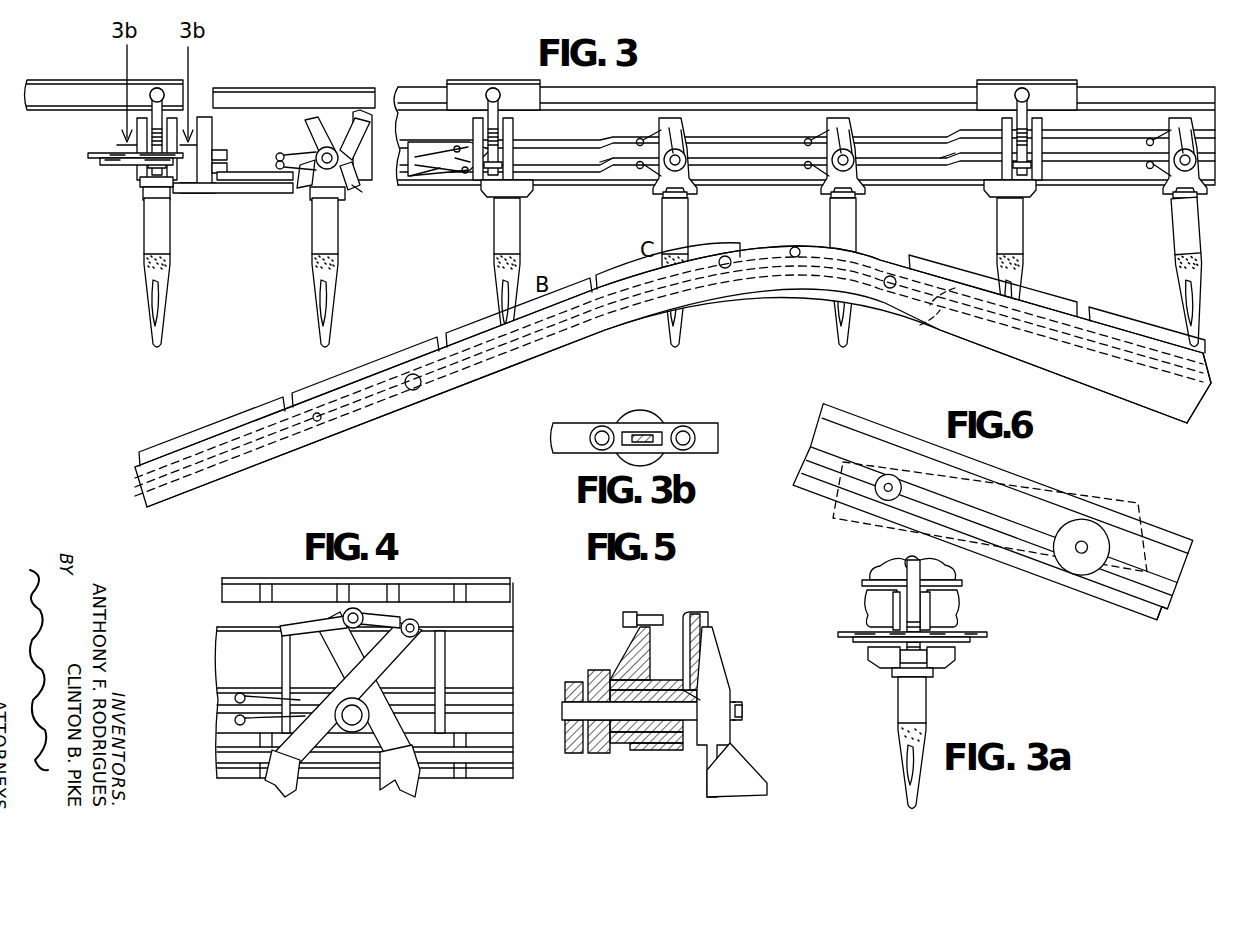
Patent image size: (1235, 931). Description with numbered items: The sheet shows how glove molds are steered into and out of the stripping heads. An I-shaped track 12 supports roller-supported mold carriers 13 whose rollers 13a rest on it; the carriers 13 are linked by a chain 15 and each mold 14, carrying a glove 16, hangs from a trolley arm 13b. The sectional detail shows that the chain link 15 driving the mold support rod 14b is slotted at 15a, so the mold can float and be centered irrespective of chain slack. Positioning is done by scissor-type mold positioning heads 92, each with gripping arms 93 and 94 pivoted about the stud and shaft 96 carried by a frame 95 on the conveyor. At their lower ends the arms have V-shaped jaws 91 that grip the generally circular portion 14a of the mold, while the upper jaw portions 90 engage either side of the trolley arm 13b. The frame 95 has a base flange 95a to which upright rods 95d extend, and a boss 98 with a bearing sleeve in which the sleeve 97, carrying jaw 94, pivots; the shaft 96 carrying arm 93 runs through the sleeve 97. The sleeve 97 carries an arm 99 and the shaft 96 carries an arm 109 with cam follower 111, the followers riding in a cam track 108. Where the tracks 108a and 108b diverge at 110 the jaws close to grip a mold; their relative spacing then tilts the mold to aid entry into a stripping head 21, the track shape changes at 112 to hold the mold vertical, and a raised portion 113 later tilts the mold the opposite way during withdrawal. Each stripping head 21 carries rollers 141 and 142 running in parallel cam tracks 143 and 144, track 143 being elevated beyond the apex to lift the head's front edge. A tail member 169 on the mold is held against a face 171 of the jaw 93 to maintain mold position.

In FIG. 3, the track 12 is at (112, 82).
In FIG. 3A, the track 12 is at (958, 582).
In FIG. 3, the mold carrier 13 is at (150, 128).
In FIG. 3A, the mold carrier 13 is at (910, 610).
In FIG. 3, the roller 13a is at (160, 87).
In FIG. 3A, the roller 13a is at (900, 570).
In FIG. 3, the trolley arm 13b is at (498, 105).
In FIG. 3, the mold 14 is at (184, 238).
In FIG. 3A, the mold 14 is at (938, 700).
In FIG. 3, the mold portion 14a is at (142, 192).
In FIG. 3B, the mold portion 14a is at (650, 420).
In FIG. 3A, the mold portion 14a is at (905, 678).
In FIG. 3B, the support rod 14b is at (637, 433).
In FIG. 3, the chain 15 is at (110, 160).
In FIG. 3B, the chain 15 is at (708, 422).
In FIG. 3A, the chain 15 is at (963, 632).
In FIG. 3B, the slot 15a is at (612, 423).
In FIG. 3, the glove 16 is at (170, 272).
In FIG. 3A, the glove 16 is at (898, 742).
In FIG. 3, the stripper head 21 is at (268, 402).
In FIG. 6, the stripper head 21 is at (1132, 505).
In FIG. 3, the jaw portion 90 is at (310, 120).
In FIG. 4, the jaw portion 90 is at (305, 635).
In FIG. 5, the jaw portion 90 is at (705, 625).
In FIG. 3, the V-shaped jaw 91 is at (358, 192).
In FIG. 3, the mold positioning head 92 is at (213, 125).
In FIG. 4, the mold positioning head 92 is at (325, 668).
In FIG. 5, the mold positioning head 92 is at (712, 668).
In FIG. 3A, the scissor gripping arm 93 is at (875, 660).
In FIG. 4, the scissor gripping arm 93 is at (290, 790).
In FIG. 5, the scissor gripping arm 93 is at (760, 785).
In FIG. 3, the scissor gripping arm 94 is at (495, 375).
In FIG. 3A, the scissor gripping arm 94 is at (945, 662).
In FIG. 4, the scissor gripping arm 94 is at (400, 780).
In FIG. 5, the scissor gripping arm 94 is at (690, 760).
In FIG. 4, the frame 95 is at (485, 625).
In FIG. 5, the frame 95 is at (665, 615).
In FIG. 4, the base flange 95a is at (490, 752).
In FIG. 4, the upright rod 95d is at (447, 695).
In FIG. 4, the shaft 96 is at (350, 705).
In FIG. 5, the shaft 96 is at (745, 710).
In FIG. 5, the sleeve 97 is at (648, 735).
In FIG. 5, the boss 98 is at (625, 752).
In FIG. 5, the arm 99 is at (600, 670).
In FIG. 3, the cam track 108 is at (420, 160).
In FIG. 3, the cam track 108a is at (560, 147).
In FIG. 3, the cam track 108b is at (548, 172).
In FIG. 5, the arm 109 is at (578, 682).
In FIG. 3, the divergence point 110 is at (418, 189).
In FIG. 3, the cam follower 111 is at (470, 178).
In FIG. 3, the cam track shape change 112 is at (612, 172).
In FIG. 3, the raised portion 113 is at (942, 172).
In FIG. 6, the roller 141 is at (1085, 578).
In FIG. 6, the roller 142 is at (888, 505).
In FIG. 3, the cam track 143 is at (948, 276).
In FIG. 6, the cam track 143 is at (1165, 560).
In FIG. 3, the cam track 144 is at (932, 328).
In FIG. 6, the cam track 144 is at (1150, 608).
In FIG. 3A, the tail member 169 is at (925, 652).
In FIG. 4, the face 171 is at (338, 762).